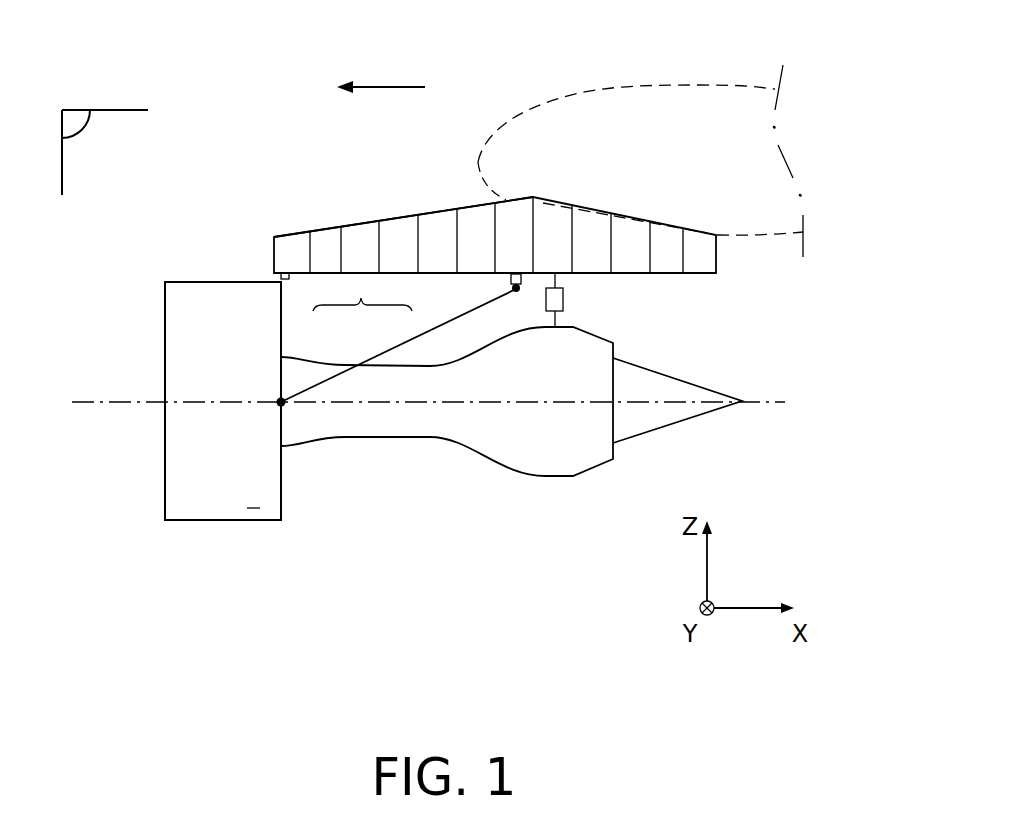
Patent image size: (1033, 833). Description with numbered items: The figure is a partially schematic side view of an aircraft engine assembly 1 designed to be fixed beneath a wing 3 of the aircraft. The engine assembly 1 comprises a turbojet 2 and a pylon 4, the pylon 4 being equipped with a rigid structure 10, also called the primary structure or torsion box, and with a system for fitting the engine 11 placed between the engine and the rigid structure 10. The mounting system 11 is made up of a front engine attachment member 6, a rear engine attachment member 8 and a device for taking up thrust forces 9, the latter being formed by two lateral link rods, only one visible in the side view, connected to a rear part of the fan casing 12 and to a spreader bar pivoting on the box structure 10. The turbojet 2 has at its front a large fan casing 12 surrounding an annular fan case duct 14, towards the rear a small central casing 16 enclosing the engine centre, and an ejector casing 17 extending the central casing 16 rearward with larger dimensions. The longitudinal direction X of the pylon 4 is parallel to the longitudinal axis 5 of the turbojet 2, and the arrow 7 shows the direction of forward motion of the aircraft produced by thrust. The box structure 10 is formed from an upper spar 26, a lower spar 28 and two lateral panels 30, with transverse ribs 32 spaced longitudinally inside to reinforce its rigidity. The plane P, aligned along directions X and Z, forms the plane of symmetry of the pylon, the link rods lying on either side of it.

The engine assembly 1 is at (231, 200).
The turbojet 2 is at (434, 458).
The wing 3 is at (546, 108).
The pylon 4 is at (493, 220).
The longitudinal axis 5 is at (90, 404).
The front engine attachment member 6 is at (291, 279).
The arrow 7 is at (376, 86).
The rear engine attachment member 8 is at (546, 307).
The device for taking up thrust forces 9 is at (382, 346).
The rigid structure 10 is at (423, 200).
The system for fitting the engine 11 is at (362, 292).
The fan casing 12 is at (172, 522).
The annular fan case duct 14 is at (268, 508).
The central casing 16 is at (382, 438).
The ejector casing 17 is at (553, 477).
The upper spar 26 is at (474, 202).
The lower spar 28 is at (648, 273).
The lateral panel 30 is at (319, 236).
The transverse ribs 32 is at (610, 243).
The plane P is at (79, 110).